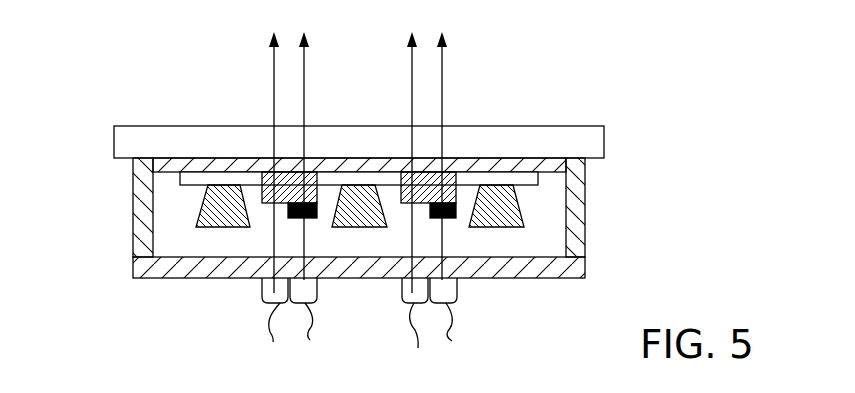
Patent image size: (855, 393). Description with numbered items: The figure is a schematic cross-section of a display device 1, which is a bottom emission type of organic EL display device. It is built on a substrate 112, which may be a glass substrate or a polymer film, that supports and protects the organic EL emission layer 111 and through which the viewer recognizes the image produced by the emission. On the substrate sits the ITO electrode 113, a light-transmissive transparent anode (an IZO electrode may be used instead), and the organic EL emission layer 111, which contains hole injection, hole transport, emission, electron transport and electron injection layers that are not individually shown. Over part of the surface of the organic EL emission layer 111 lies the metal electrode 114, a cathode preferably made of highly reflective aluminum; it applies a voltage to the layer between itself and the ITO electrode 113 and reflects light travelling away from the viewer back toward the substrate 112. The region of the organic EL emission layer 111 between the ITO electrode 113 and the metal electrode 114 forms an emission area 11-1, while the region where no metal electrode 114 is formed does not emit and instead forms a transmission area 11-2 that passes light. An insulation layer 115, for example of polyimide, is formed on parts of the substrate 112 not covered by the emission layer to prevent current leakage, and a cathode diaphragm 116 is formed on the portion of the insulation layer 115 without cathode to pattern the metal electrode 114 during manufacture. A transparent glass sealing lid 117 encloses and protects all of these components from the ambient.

The display device 1 is at (682, 38).
The emission area 11-1 is at (310, 340).
The transmission area 11-2 is at (272, 342).
The organic EL emission layer 111 is at (262, 172).
The substrate 112 is at (604, 142).
The ITO electrode 113 is at (164, 173).
The metal electrode 114 is at (318, 210).
The insulation layer 115 is at (192, 186).
The cathode diaphragm 116 is at (504, 195).
The transparent glass sealing lid 117 is at (585, 263).